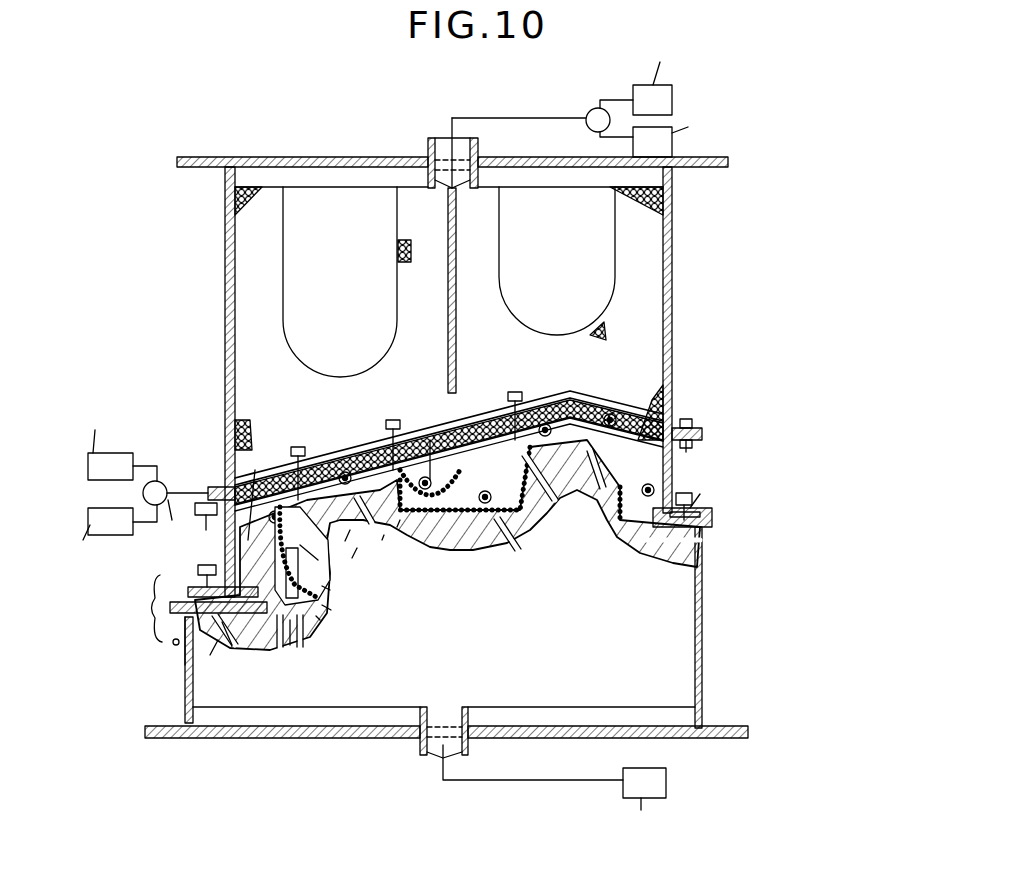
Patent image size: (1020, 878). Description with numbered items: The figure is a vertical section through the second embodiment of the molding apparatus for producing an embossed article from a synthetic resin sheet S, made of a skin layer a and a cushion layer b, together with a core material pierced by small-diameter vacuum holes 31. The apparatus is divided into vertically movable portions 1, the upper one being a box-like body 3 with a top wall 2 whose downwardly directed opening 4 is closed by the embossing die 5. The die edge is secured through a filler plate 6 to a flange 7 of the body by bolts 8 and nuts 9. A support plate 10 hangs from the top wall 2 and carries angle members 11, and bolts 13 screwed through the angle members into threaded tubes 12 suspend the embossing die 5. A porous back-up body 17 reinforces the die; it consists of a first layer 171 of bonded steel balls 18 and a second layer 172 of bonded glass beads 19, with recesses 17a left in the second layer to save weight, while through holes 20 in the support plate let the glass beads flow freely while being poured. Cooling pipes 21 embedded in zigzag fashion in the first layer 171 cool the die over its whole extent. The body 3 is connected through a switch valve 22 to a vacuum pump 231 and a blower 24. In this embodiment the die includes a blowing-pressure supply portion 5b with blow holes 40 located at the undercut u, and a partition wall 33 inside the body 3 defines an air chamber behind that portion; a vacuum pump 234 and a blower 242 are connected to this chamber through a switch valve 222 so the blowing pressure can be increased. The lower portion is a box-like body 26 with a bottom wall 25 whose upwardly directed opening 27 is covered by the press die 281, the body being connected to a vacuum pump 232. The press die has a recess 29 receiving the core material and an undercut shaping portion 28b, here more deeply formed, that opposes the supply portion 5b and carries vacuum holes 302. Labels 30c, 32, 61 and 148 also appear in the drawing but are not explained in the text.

The vertically movable portion 1 is at (447, 545).
The top wall 2 is at (302, 157).
The box-like body 3 is at (672, 288).
The downwardly directed opening 4 is at (473, 562).
The embossing die 5 is at (431, 478).
The filler plate 6 is at (702, 521).
The flange 7 is at (198, 584).
The bolt 8 is at (173, 649).
The nut 9 is at (695, 497).
The support plate 10 is at (456, 327).
The angle member 11 is at (674, 266).
The threaded tube 12 is at (728, 613).
The bolt 13 is at (298, 447).
The porous back-up body 17 is at (645, 228).
The recess 17a is at (283, 263).
The first layer 171 is at (337, 470).
The second layer 172 is at (640, 352).
The steel ball 18 is at (438, 486).
The glass bead 19 is at (322, 460).
The through hole 20 is at (456, 282).
The cooling pipe 21 is at (352, 478).
The switch valve 22 is at (598, 110).
The switch valve 222 is at (165, 487).
The vacuum pump 231 is at (672, 100).
The vacuum pump 232 is at (666, 784).
The vacuum pump 234 is at (110, 460).
The blower 24 is at (672, 145).
The blower 242 is at (108, 535).
The bottom wall 25 is at (583, 738).
The box-like body 26 is at (186, 660).
The upwardly directed opening 27 is at (209, 656).
The press die 281 is at (382, 540).
The undercut shaping portion 28b is at (342, 611).
The recess 29 is at (397, 527).
The channel 30c is at (346, 544).
The vacuum hole 302 is at (320, 620).
The vacuum hole 31 is at (350, 494).
The layer 32 is at (345, 562).
The partition wall 33 is at (257, 475).
The blow hole 40 is at (297, 632).
The blowing-pressure supply portion 5b is at (337, 593).
The bottom flange 61 is at (220, 633).
The mold shoulder 148 is at (669, 552).
The synthetic resin sheet S is at (145, 608).
The skin layer a is at (188, 590).
The cushion layer b is at (182, 613).
The undercut u is at (295, 556).